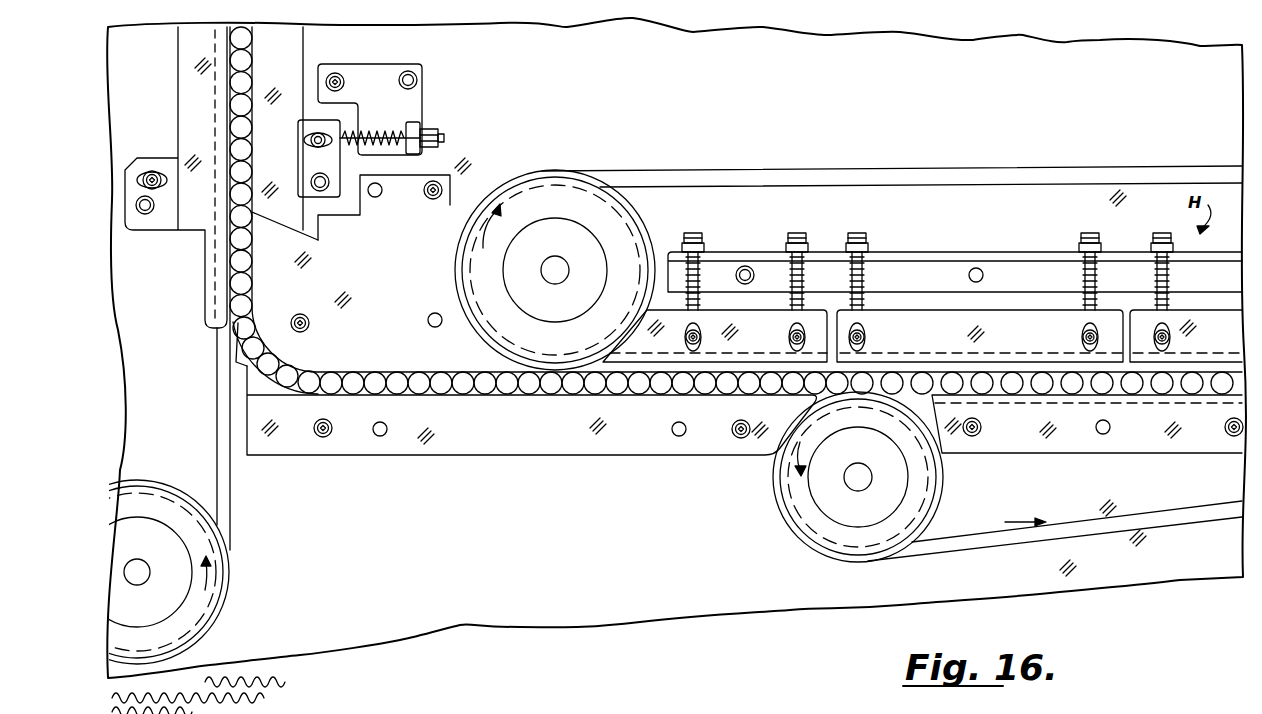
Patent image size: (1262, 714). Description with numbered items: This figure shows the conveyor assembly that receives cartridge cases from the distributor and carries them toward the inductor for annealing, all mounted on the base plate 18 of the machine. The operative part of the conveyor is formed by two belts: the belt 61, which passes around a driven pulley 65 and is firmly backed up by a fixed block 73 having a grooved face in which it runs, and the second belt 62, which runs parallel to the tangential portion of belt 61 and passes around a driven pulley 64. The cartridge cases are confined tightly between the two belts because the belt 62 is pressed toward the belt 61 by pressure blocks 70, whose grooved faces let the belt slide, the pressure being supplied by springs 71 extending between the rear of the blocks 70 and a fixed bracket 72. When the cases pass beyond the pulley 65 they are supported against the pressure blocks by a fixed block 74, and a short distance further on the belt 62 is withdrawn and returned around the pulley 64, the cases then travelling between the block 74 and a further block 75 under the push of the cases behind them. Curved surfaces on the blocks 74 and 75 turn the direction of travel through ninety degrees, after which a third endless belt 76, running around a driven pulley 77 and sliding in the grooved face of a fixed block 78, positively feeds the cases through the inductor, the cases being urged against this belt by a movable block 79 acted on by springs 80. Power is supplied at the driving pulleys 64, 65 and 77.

The base plate 18 is at (753, 600).
The belt 61 is at (1022, 537).
The second belt 62 is at (910, 157).
The driven pulley 64 is at (533, 188).
The driven pulley 65 is at (922, 494).
The pressure blocks 70 is at (757, 323).
The springs 71 is at (808, 272).
The fixed bracket 72 is at (1002, 253).
The fixed block 73 is at (1070, 447).
The fixed block 74 is at (632, 443).
The block 75 is at (410, 188).
The third endless belt 76 is at (228, 487).
The driven pulley 77 is at (222, 595).
The fixed block 78 is at (191, 234).
The movable block 79 is at (288, 50).
The springs 80 is at (378, 130).